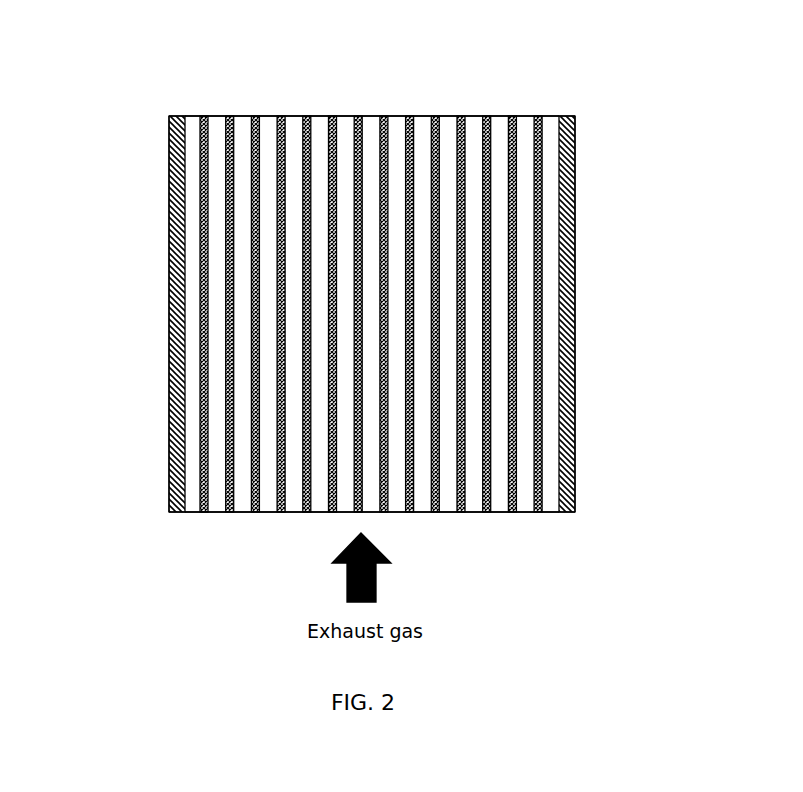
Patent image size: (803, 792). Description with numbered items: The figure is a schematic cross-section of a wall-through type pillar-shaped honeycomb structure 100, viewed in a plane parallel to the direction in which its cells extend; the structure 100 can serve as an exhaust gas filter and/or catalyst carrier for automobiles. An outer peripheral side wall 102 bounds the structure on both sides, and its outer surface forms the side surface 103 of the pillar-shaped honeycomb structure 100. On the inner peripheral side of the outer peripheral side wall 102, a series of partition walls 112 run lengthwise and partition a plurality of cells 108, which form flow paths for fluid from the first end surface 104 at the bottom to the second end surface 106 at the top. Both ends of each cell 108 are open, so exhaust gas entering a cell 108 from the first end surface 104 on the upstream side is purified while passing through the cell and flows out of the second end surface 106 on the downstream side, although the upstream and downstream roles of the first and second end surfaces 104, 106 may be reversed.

The pillar-shaped honeycomb structure 100 is at (369, 303).
The outer peripheral side wall 102 is at (575, 117).
The side surface 103 is at (168, 152).
The first end surface 104 is at (512, 514).
The second end surface 106 is at (255, 110).
The cells 108 is at (447, 127).
The partition walls 112 is at (205, 264).